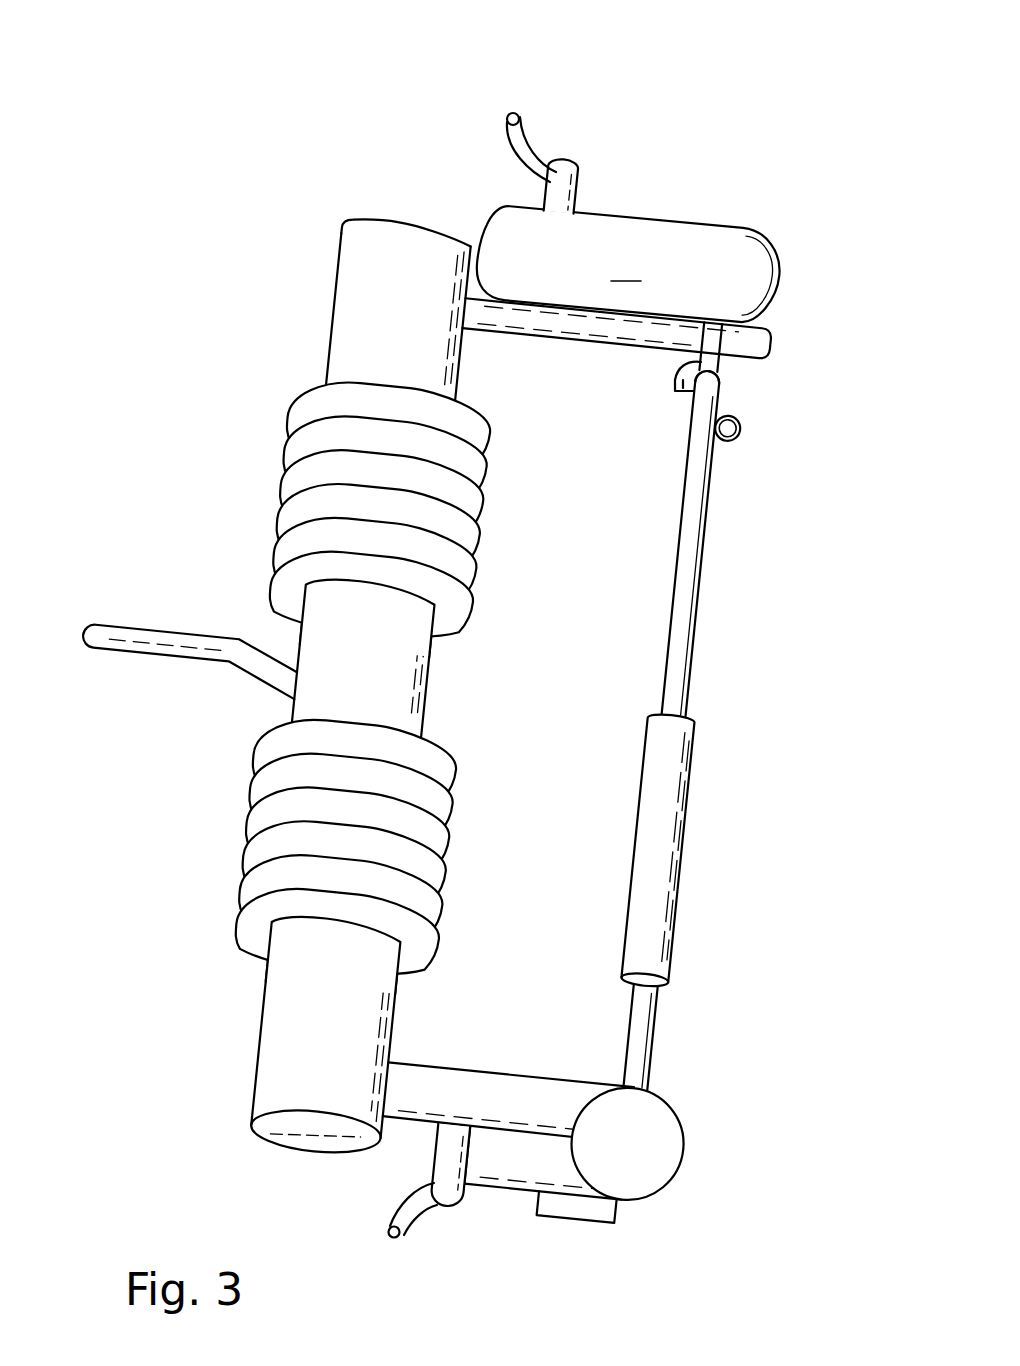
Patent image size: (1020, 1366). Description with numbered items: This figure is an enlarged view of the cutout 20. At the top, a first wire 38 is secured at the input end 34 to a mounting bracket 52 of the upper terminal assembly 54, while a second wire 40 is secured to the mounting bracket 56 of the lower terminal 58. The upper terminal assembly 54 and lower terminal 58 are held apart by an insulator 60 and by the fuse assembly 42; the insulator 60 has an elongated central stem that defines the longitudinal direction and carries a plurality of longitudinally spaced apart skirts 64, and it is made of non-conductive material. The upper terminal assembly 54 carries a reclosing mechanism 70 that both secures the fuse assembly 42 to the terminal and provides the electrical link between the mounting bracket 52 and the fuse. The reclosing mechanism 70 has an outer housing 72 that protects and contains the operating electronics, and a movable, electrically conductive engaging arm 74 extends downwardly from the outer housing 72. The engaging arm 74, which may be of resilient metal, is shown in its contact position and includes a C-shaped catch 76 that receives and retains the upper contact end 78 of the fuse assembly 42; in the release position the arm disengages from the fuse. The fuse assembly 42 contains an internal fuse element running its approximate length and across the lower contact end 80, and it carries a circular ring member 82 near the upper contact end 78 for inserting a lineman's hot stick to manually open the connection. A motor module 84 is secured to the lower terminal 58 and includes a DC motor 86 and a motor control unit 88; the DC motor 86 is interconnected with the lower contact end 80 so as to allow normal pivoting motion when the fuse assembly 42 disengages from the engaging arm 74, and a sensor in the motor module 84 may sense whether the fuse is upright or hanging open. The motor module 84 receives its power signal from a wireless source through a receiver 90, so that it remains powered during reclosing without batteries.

The cutout 20 is at (260, 196).
The input end 34 is at (588, 94).
The first wire 38 is at (515, 143).
The second wire 40 is at (410, 1210).
The fuse assembly 42 is at (714, 540).
The mounting bracket 52 is at (563, 183).
The upper terminal assembly 54 is at (573, 350).
The mounting bracket 56 is at (447, 1152).
The lower terminal 58 is at (440, 704).
The insulator 60 is at (493, 1062).
The skirts 64 is at (368, 470).
The reclosing mechanism 70 is at (637, 254).
The outer housing 72 is at (626, 268).
The engaging arm 74 is at (683, 388).
The C-shaped catch 76 is at (722, 372).
The upper contact end 78 is at (722, 388).
The lower contact end 80 is at (640, 1042).
The circular ring member 82 is at (737, 445).
The motor module 84 is at (618, 1194).
The DC motor 86 is at (653, 1143).
The motor control unit 88 is at (518, 1190).
The receiver 90 is at (583, 1205).